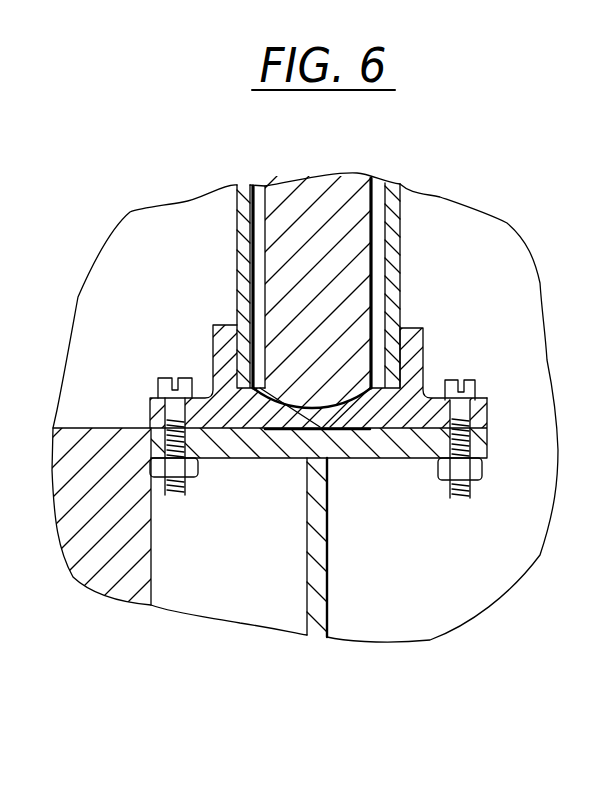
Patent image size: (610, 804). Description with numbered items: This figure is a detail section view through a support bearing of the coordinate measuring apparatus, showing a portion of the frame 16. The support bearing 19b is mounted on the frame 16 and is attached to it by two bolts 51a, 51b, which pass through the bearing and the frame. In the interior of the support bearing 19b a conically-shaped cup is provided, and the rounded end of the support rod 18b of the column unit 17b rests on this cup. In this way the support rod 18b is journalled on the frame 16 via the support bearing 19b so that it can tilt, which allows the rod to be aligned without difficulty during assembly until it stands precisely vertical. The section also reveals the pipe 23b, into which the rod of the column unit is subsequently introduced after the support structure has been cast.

The frame 16 is at (329, 602).
The column unit 17b is at (407, 215).
The support rod 18b is at (317, 185).
The support bearing 19b is at (421, 397).
The pipe 23b is at (248, 189).
The bolt 51a is at (160, 389).
The bolt 51b is at (474, 389).